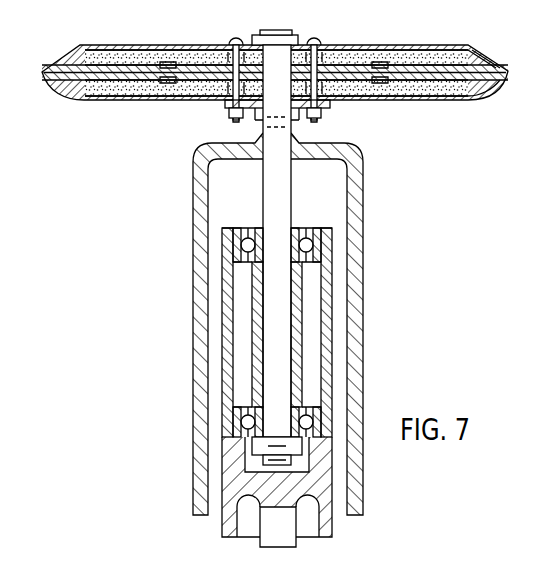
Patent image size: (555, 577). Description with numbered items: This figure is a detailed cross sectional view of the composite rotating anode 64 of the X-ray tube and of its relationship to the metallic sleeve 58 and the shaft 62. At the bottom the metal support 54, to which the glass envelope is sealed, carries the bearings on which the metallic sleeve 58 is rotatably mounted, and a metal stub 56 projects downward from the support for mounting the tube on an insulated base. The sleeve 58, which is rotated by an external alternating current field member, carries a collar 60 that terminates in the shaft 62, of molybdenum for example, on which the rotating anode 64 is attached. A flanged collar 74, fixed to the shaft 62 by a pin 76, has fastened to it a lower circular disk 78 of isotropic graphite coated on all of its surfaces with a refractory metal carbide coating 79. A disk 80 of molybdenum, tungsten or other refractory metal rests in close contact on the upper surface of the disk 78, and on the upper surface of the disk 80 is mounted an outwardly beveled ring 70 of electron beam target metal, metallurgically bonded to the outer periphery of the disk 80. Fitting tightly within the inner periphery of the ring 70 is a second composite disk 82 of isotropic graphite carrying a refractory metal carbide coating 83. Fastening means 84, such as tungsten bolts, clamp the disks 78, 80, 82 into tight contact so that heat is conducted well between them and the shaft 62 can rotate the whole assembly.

The metal support 54 is at (331, 522).
The metal stub 56 is at (285, 539).
The metallic sleeve 58 is at (352, 243).
The collar 60 is at (346, 152).
The shaft 62 is at (258, 161).
The rotating anode 64 is at (118, 90).
The outwardly beveled ring 70 is at (76, 62).
The flanged collar 74 is at (297, 123).
The pin 76 is at (257, 123).
The lower circular disk 78 is at (473, 97).
The refractory metal carbide coating 79 is at (412, 100).
The disk 80 is at (506, 73).
The second composite disk 82 is at (426, 55).
The refractory metal carbide coating 83 is at (387, 46).
The fastening means 84 is at (321, 47).